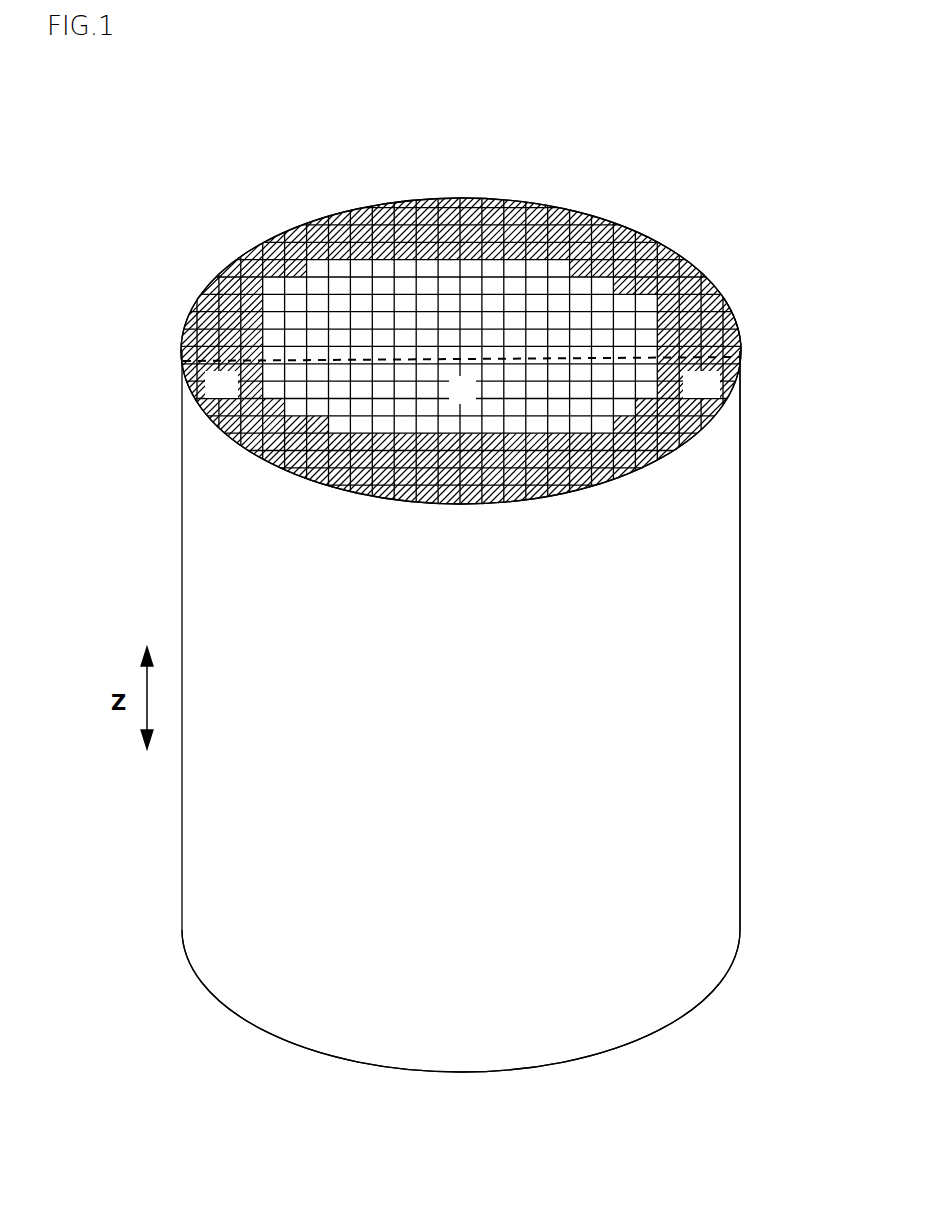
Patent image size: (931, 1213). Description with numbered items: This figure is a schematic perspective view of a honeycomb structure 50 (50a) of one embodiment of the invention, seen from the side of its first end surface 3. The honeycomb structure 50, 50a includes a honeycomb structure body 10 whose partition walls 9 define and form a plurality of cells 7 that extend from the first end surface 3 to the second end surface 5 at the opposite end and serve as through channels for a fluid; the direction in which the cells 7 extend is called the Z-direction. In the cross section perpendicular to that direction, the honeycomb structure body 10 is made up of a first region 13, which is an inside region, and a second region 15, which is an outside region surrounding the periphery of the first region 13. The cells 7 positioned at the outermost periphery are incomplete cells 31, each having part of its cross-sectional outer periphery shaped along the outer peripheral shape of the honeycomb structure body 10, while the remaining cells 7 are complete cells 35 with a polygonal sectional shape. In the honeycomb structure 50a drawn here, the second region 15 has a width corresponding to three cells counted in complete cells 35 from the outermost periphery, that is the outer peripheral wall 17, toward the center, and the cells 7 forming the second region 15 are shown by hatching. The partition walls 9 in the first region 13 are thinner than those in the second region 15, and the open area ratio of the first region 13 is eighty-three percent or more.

The honeycomb structure 50 is at (674, 108).
The honeycomb structure 50a is at (461, 351).
The first end surface 3 is at (197, 305).
The second end surface 5 is at (208, 990).
The cells 7 is at (696, 270).
The incomplete cells 31 is at (466, 204).
The complete cells 35 is at (600, 288).
The partition walls 9 is at (720, 298).
The honeycomb structure body 10 is at (597, 219).
The first region 13 is at (463, 366).
The second region 15 is at (222, 362).
The outer peripheral wall 17 is at (709, 586).